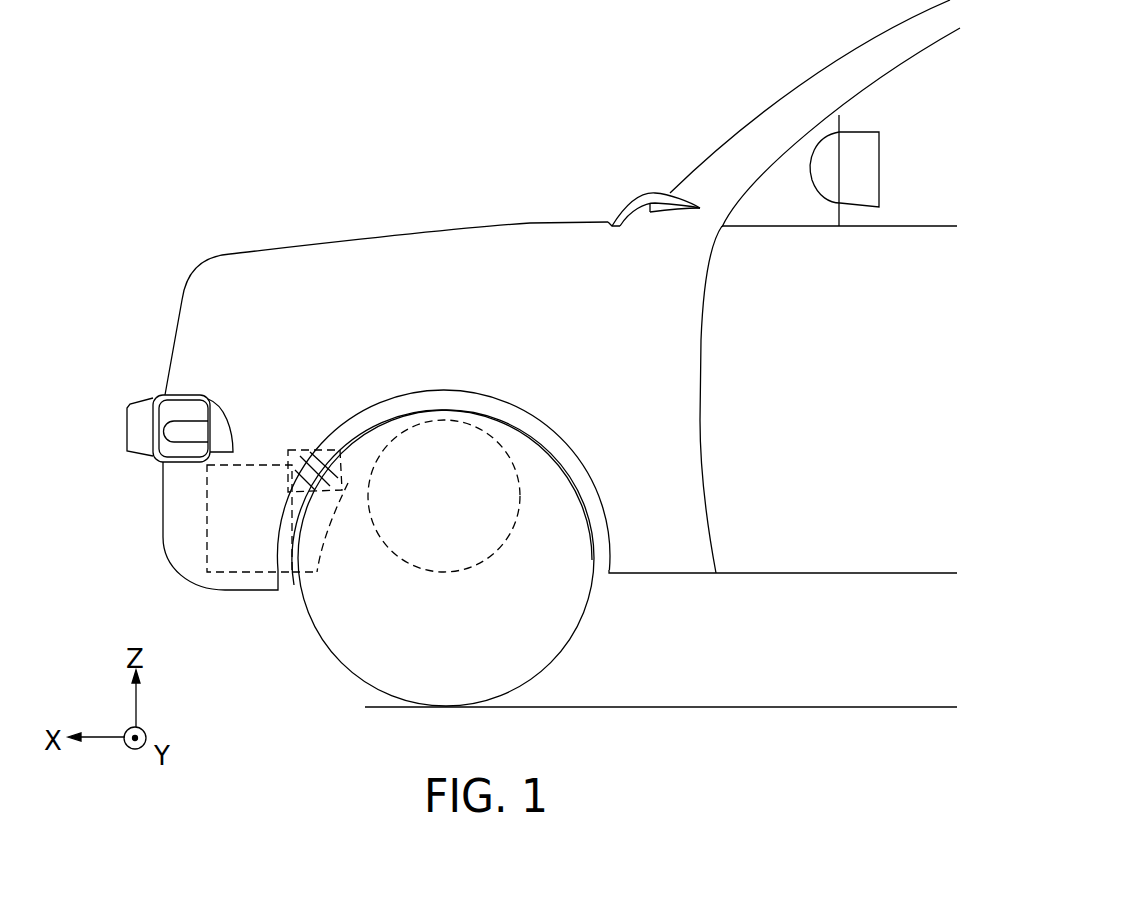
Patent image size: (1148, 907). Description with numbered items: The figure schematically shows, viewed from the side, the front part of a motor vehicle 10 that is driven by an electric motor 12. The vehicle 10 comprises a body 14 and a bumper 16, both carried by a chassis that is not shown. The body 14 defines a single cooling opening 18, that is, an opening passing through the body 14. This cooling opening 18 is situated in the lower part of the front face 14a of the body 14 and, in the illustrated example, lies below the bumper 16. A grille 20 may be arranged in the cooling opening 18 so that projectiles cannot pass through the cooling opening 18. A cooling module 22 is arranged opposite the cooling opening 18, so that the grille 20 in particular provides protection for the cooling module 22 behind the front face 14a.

The motor vehicle 10 is at (235, 128).
The electric motor 12 is at (385, 543).
The body 14 is at (195, 274).
The front face 14a is at (177, 318).
The bumper 16 is at (140, 420).
The cooling opening 18 is at (152, 508).
The grille 20 is at (163, 492).
The cooling module 22 is at (210, 530).